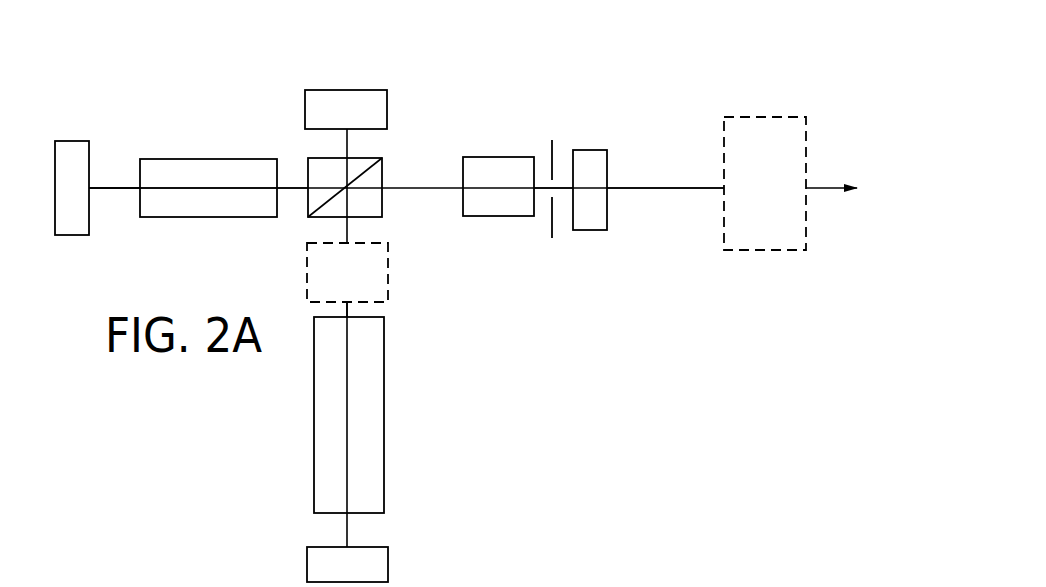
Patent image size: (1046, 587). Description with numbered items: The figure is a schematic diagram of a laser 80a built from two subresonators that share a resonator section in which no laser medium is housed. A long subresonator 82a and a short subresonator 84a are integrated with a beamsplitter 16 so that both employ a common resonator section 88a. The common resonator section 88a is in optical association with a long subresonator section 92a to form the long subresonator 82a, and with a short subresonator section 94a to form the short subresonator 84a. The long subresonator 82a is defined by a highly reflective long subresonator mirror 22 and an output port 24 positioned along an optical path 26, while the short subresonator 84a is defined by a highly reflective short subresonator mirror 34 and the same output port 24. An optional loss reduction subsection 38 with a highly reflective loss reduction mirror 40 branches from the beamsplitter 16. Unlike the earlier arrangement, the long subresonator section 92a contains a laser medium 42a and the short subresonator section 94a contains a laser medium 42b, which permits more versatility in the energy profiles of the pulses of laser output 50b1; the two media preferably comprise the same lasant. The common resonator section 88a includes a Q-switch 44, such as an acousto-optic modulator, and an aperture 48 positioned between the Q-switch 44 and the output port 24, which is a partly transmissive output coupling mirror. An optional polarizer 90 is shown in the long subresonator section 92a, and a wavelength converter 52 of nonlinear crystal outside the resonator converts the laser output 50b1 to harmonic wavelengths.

The beamsplitter 16 is at (325, 157).
The long subresonator mirror 22 is at (388, 567).
The output port 24 is at (595, 150).
The optical path 26 is at (423, 190).
The short subresonator mirror 34 is at (55, 178).
The loss reduction subsection 38 is at (347, 148).
The loss reduction mirror 40 is at (338, 90).
The laser medium 42a is at (384, 380).
The laser medium 42b is at (205, 217).
The Q-switch 44 is at (498, 157).
The aperture 48 is at (550, 157).
The laser output 50b1 is at (660, 187).
The wavelength converter 52 is at (760, 113).
The laser 80a is at (560, 70).
The long subresonator 82a is at (255, 458).
The short subresonator 84a is at (115, 157).
The common resonator section 88a is at (572, 135).
The polarizer 90 is at (388, 273).
The long subresonator section 92a is at (347, 523).
The short subresonator section 94a is at (125, 188).